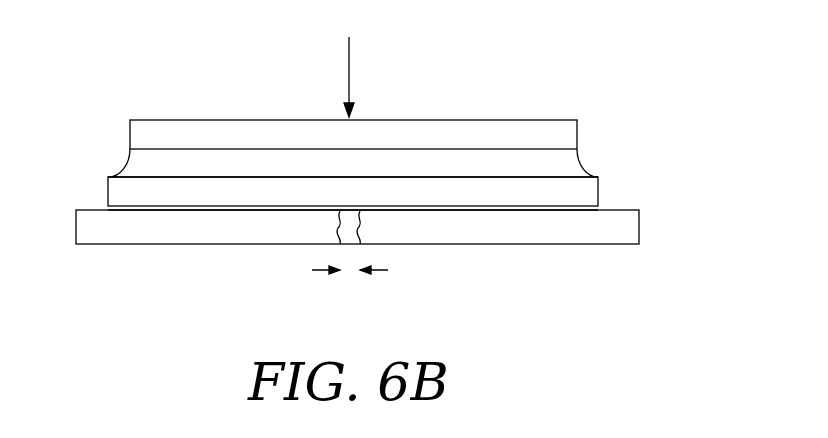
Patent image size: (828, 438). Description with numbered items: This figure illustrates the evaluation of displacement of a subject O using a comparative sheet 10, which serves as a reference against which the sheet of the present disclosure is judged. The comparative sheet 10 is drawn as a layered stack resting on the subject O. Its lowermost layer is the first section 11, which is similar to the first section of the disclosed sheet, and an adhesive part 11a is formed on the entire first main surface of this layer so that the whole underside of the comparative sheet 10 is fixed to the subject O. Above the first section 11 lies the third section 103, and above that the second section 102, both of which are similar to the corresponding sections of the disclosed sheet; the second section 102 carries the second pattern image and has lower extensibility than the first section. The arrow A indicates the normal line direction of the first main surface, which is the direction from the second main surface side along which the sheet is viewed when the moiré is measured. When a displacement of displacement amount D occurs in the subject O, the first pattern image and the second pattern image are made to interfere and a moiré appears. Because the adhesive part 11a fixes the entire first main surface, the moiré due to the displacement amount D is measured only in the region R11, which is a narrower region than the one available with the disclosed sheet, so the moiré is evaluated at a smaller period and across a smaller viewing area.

The second section 102 is at (617, 192).
The third section 103 is at (389, 162).
The first section of comparative sheet 11 is at (385, 190).
The adhesive part 11a is at (493, 211).
The comparative sheet 10 is at (508, 112).
The subject O is at (144, 221).
The arrow indicating normal line direction A is at (350, 75).
The displacement amount D is at (350, 270).
The region R11 is at (340, 244).